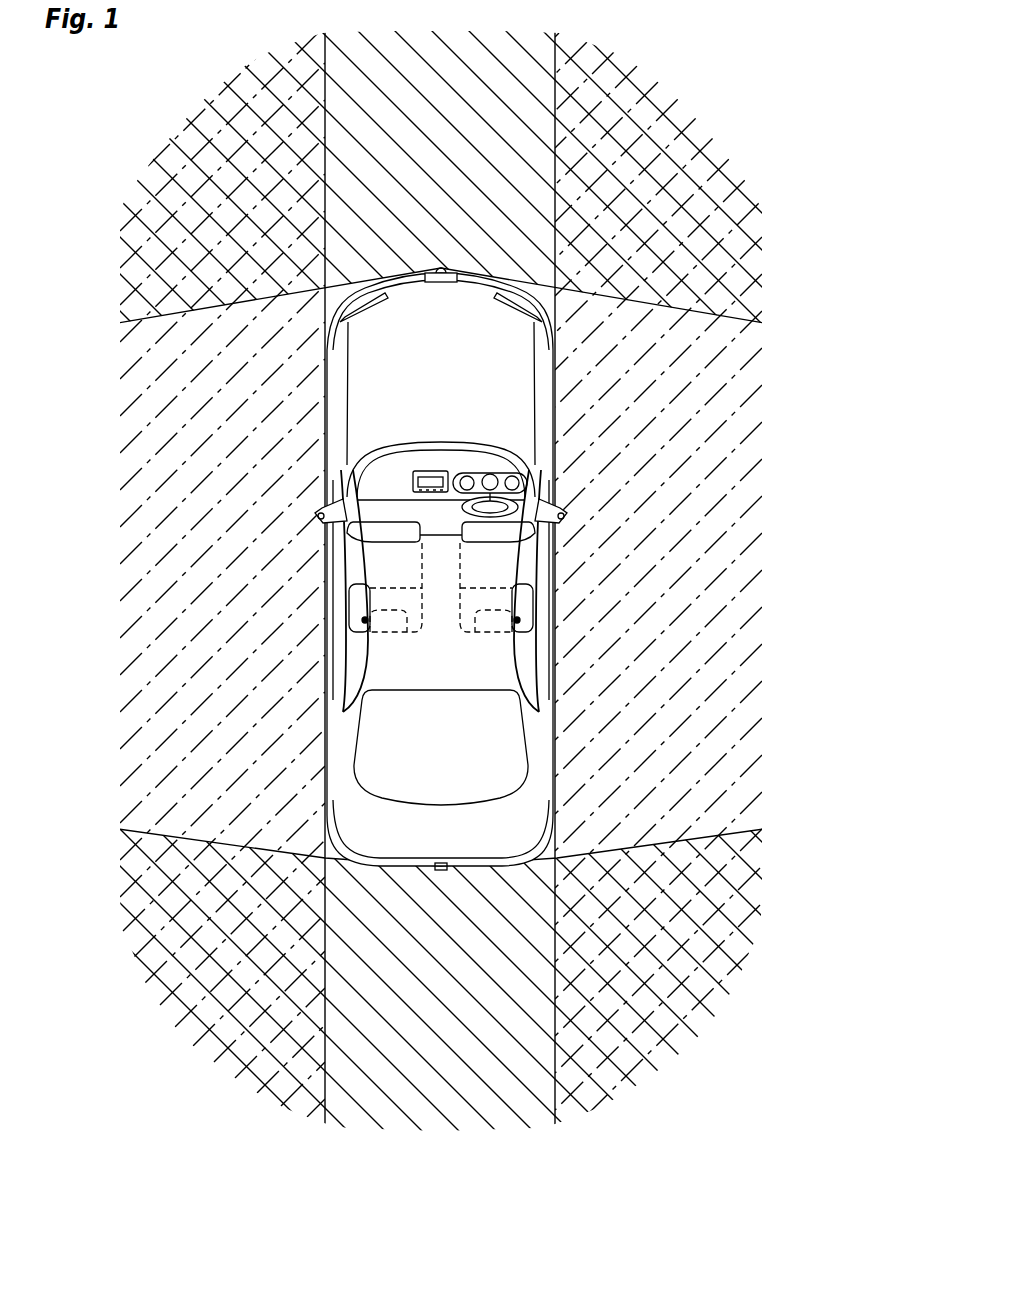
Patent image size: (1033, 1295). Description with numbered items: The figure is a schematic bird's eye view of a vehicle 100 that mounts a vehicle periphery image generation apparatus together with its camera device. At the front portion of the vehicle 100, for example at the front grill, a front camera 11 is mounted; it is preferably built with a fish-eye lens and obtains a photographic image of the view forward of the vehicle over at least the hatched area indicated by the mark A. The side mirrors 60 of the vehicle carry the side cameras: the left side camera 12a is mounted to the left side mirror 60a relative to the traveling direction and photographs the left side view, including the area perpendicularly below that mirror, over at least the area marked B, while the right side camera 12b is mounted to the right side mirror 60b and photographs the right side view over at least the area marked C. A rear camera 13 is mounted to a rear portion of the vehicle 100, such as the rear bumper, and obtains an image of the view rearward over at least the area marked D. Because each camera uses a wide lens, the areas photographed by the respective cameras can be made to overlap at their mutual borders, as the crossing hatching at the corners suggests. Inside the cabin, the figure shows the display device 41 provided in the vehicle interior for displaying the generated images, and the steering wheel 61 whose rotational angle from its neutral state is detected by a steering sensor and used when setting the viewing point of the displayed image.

The vehicle 100 is at (446, 567).
The front camera 11 is at (440, 268).
The rear camera 13 is at (440, 872).
The left side camera 12a is at (317, 513).
The right side camera 12b is at (563, 522).
The side mirror 60 is at (446, 471).
The left side mirror 60a is at (246, 463).
The right side mirror 60b is at (641, 487).
The display device 41 is at (430, 480).
The steering wheel 61 is at (494, 474).
The area photographed by front camera A is at (455, 133).
The area photographed by left side camera B is at (242, 608).
The area photographed by right side camera C is at (680, 608).
The area photographed by rear camera D is at (460, 1041).